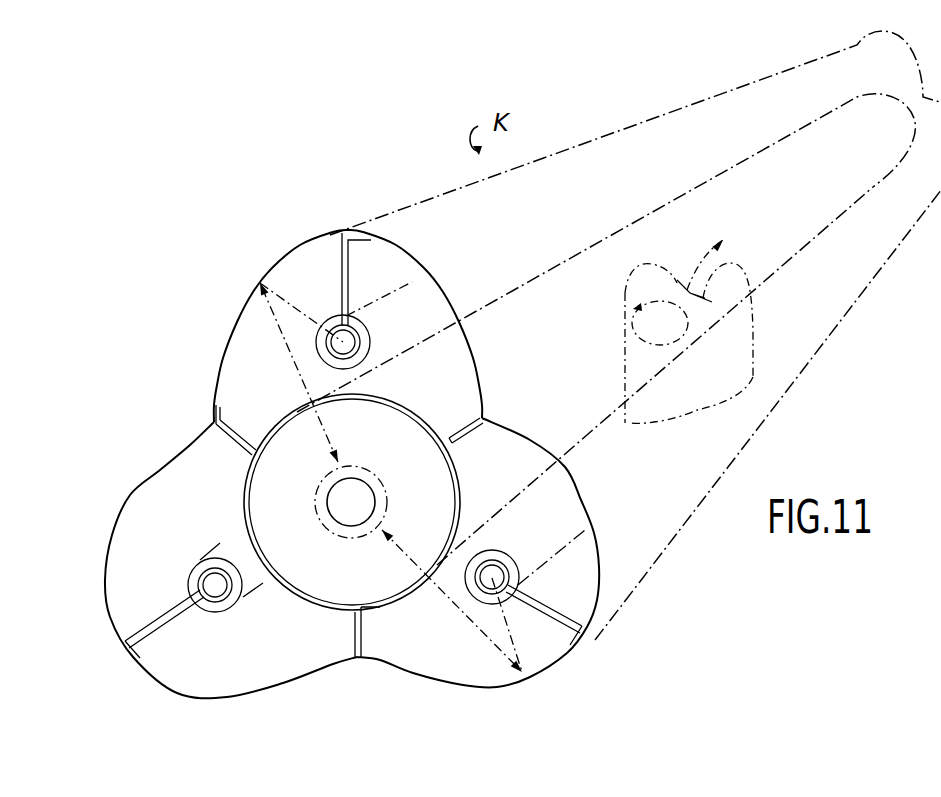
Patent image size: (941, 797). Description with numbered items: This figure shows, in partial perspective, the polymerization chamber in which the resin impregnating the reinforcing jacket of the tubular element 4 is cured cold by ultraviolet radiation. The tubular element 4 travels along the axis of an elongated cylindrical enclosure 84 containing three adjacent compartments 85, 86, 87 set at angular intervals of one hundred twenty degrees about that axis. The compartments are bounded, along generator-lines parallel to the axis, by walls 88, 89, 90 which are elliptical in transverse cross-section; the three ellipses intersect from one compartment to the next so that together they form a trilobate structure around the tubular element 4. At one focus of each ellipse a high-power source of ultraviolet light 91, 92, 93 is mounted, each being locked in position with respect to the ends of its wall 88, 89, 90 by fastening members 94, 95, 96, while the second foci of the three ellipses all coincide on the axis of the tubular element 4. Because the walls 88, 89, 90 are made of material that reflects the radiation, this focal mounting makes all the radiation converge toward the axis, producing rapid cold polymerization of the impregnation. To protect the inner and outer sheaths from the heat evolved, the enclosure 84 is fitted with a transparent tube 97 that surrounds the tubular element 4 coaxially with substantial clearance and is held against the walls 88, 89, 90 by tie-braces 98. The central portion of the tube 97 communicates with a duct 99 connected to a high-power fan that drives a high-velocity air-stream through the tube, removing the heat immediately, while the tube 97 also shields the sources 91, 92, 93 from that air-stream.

The tubular element 4 is at (312, 515).
The elongated cylindrical enclosure 84 is at (643, 127).
The compartment 85 is at (446, 372).
The compartment 86 is at (560, 503).
The compartment 87 is at (188, 468).
The wall 88 is at (440, 287).
The wall 89 is at (543, 463).
The wall 90 is at (266, 693).
The source of ultraviolet light 91 is at (339, 333).
The source of ultraviolet light 92 is at (494, 572).
The source of ultraviolet light 93 is at (215, 578).
The fastening member 94 is at (357, 275).
The fastening member 95 is at (563, 612).
The fastening member 96 is at (168, 610).
The transparent tube 97 is at (457, 515).
The tie-brace 98 is at (458, 434).
The duct 99 is at (753, 333).